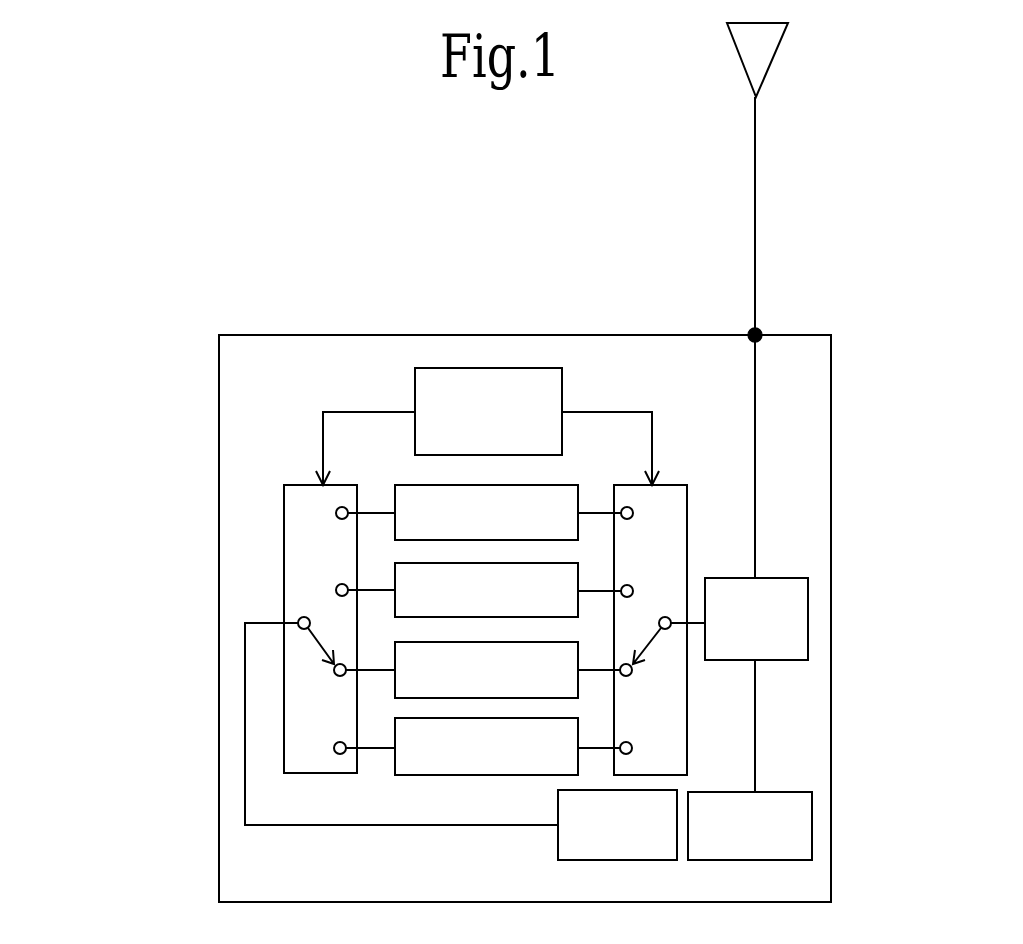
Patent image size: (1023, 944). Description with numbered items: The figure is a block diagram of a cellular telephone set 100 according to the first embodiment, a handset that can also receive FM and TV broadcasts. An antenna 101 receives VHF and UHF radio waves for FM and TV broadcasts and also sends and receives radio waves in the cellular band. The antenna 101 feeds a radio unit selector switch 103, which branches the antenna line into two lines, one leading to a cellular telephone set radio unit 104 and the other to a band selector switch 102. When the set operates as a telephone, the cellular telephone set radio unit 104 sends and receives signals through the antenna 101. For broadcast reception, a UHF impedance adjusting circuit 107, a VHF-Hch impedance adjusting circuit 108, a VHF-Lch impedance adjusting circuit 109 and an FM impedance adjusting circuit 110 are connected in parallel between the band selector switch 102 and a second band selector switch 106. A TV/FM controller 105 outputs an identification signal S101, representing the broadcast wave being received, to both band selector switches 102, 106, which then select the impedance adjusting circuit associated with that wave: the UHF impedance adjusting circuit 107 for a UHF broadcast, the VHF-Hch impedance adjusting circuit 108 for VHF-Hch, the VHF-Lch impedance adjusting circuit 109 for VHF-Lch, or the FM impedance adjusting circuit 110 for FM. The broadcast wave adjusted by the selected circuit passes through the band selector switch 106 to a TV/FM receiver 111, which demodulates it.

The cellular telephone set 100 is at (867, 721).
The antenna 101 is at (757, 198).
The band selector switch 102 is at (688, 522).
The radio unit selector switch 103 is at (808, 603).
The cellular telephone set radio unit 104 is at (812, 798).
The TV/FM controller 105 is at (455, 368).
The band selector switch 106 is at (284, 524).
The UHF impedance adjusting circuit 107 is at (423, 485).
The VHF-Hch impedance adjusting circuit 108 is at (428, 563).
The VHF-Lch impedance adjusting circuit 109 is at (425, 643).
The FM impedance adjusting circuit 110 is at (418, 776).
The TV/FM receiver 111 is at (558, 842).
The identification signal S101 is at (357, 410).